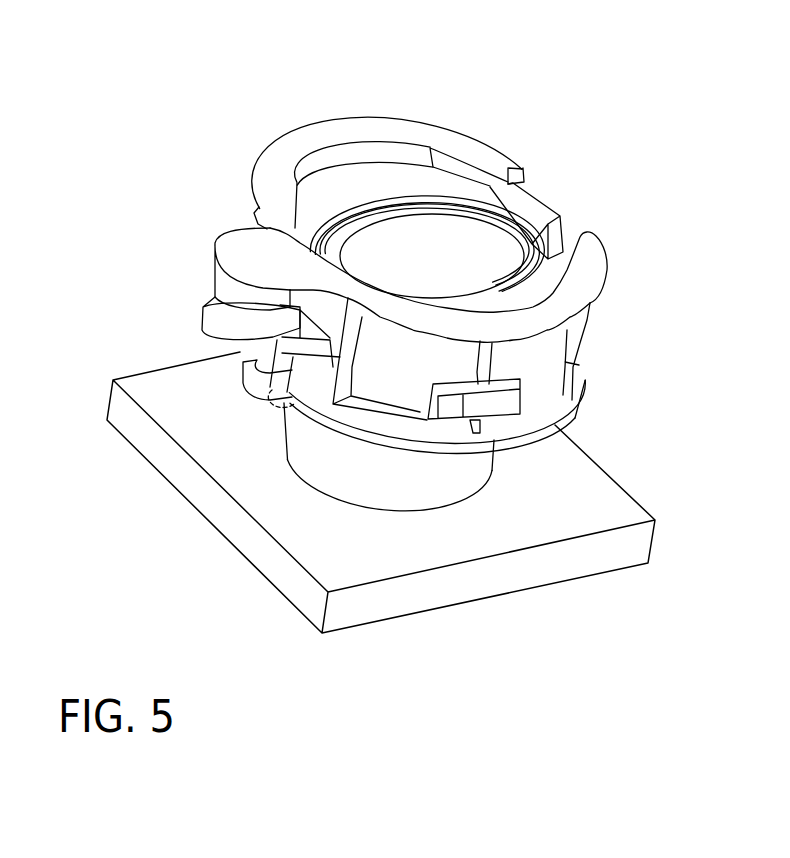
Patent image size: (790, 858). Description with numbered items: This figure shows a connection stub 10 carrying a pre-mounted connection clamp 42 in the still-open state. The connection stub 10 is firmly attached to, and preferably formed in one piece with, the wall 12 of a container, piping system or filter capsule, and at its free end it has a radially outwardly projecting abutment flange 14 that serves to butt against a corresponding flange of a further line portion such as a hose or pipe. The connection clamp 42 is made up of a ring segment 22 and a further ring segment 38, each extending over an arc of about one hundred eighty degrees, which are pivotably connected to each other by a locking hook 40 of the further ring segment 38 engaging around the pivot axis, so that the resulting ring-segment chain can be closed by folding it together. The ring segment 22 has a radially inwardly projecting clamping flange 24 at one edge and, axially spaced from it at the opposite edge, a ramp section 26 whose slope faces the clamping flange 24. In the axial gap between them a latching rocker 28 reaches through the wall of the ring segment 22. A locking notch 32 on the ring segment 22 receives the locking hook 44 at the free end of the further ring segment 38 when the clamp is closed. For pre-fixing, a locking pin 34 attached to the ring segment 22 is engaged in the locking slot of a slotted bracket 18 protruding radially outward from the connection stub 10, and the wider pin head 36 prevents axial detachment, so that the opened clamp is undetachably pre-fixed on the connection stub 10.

The connection stub 10 is at (435, 487).
The wall 12 is at (553, 527).
The abutment flange 14 is at (417, 200).
The slotted bracket 18 is at (247, 377).
The ring segment 22 is at (614, 306).
The clamping flange 24 is at (280, 170).
The ramp section 26 is at (537, 430).
The latching rocker 28 is at (480, 407).
The locking notch 32 is at (577, 338).
The locking pin 34 is at (275, 383).
The pin head 36 is at (282, 398).
The further ring segment 38 is at (277, 115).
The locking hook 40 is at (223, 302).
The connection clamp 42 is at (324, 77).
The locking hook 44 is at (543, 228).